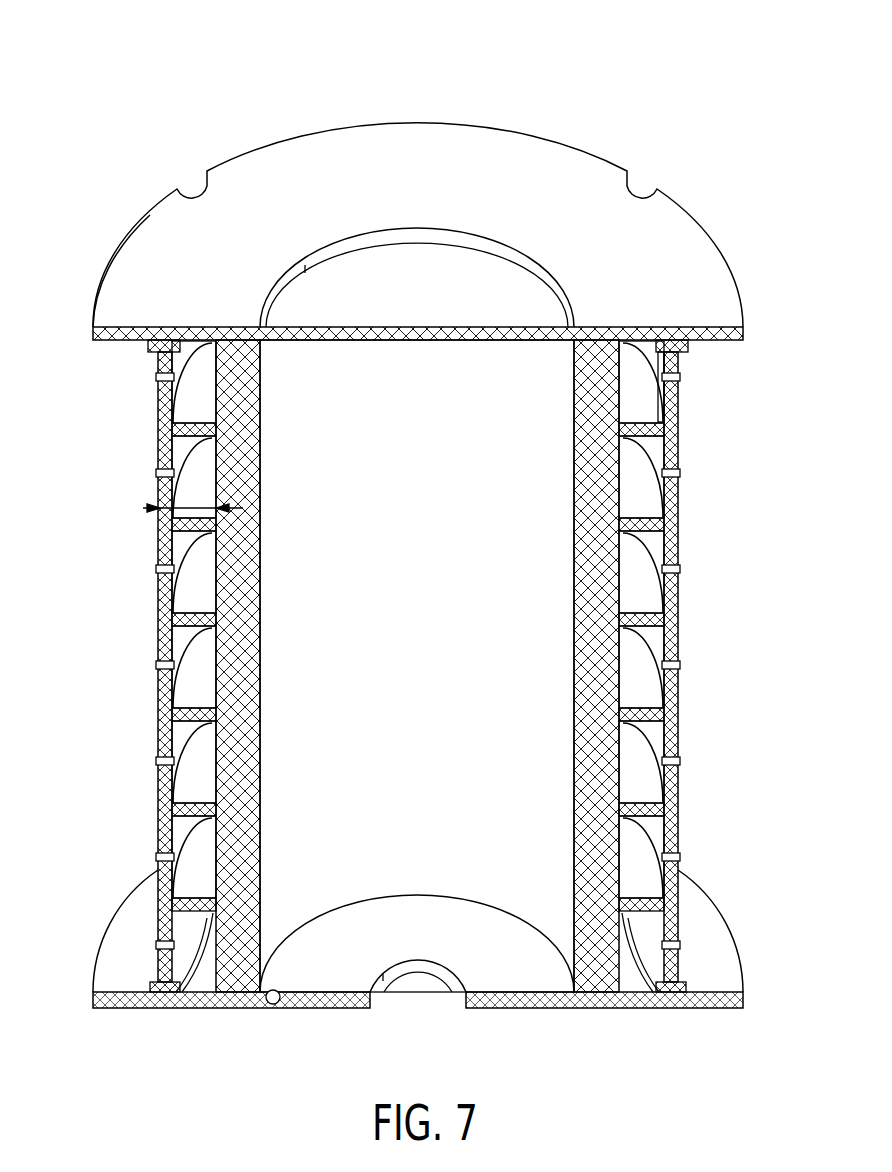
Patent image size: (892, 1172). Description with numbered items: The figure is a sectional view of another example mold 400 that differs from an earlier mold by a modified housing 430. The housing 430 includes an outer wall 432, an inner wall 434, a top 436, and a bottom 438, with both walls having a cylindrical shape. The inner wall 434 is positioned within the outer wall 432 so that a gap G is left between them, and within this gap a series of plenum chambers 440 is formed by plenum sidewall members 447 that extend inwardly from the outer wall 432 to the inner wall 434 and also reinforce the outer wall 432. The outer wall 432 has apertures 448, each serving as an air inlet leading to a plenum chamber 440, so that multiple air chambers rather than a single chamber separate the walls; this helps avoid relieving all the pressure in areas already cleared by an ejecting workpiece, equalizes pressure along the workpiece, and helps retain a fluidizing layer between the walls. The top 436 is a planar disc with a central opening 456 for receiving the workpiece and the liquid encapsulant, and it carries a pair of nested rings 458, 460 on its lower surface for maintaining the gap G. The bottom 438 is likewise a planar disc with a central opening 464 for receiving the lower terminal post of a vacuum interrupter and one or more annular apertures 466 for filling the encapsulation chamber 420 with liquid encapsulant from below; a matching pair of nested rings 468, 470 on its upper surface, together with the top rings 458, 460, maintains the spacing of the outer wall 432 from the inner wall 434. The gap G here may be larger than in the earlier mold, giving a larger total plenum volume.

The mold 400 is at (732, 95).
The housing 430 is at (627, 127).
The top 436 is at (122, 281).
The central opening 456 is at (431, 334).
The encapsulation chamber 420 is at (504, 819).
The inner wall 434 is at (217, 866).
The outer wall 432 is at (170, 804).
The nested ring 458 is at (687, 347).
The nested ring 460 is at (660, 353).
The plenum sidewall member 447 is at (193, 623).
The plenum chamber 440 is at (203, 566).
The aperture 448 is at (170, 673).
The gap G is at (196, 490).
The bottom 438 is at (115, 970).
The nested ring 468 is at (687, 987).
The nested ring 470 is at (660, 980).
The central opening 464 is at (437, 1011).
The annular aperture 466 is at (273, 1005).